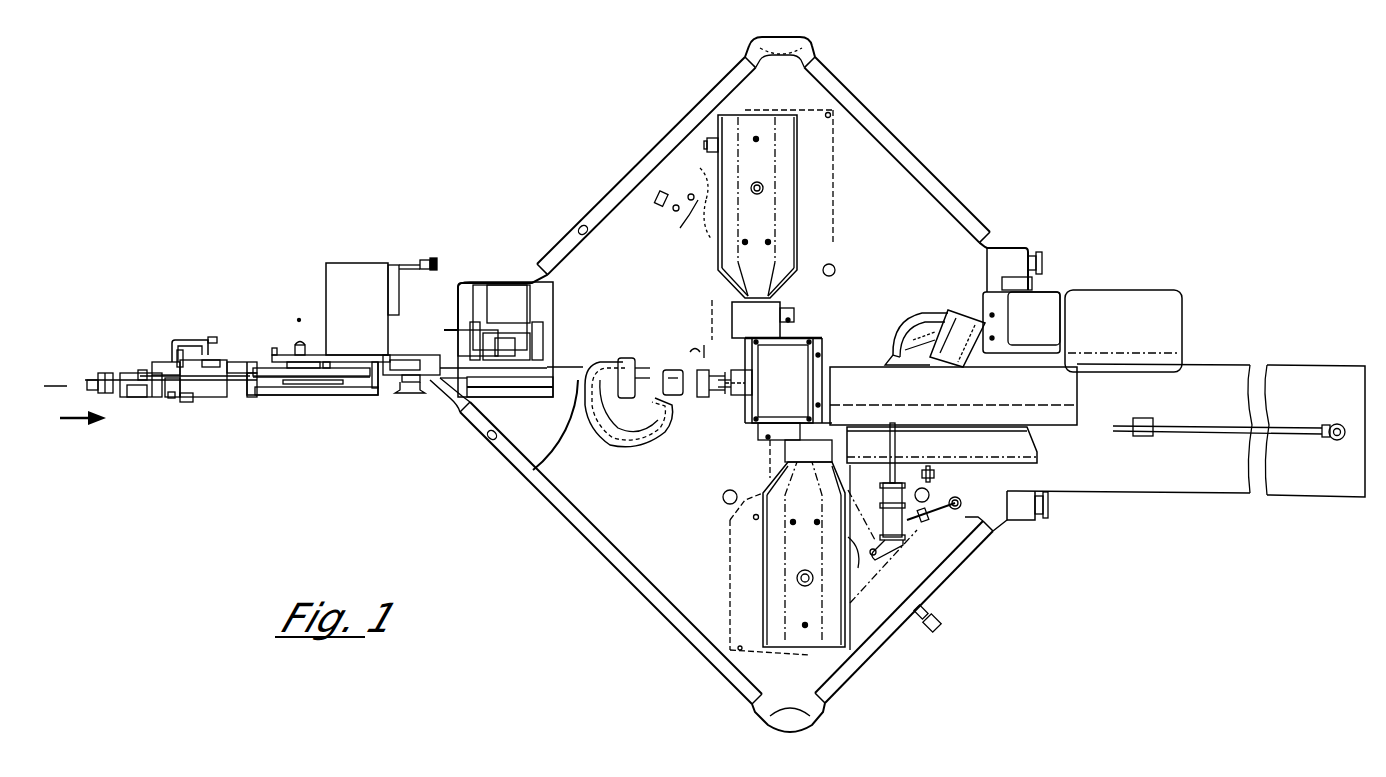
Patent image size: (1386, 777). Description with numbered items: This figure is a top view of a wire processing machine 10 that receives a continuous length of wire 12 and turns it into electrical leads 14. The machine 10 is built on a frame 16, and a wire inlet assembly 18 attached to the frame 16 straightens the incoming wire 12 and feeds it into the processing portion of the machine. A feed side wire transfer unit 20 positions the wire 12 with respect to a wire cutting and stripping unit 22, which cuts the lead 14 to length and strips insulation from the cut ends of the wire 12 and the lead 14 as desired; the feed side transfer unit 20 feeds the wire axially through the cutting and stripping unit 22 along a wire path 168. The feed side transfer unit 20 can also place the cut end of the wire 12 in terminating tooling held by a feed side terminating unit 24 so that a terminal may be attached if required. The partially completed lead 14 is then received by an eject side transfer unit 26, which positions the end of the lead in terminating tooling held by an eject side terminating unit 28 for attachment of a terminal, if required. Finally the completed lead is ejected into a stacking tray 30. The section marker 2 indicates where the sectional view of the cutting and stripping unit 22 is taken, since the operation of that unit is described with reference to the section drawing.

The wire processing machine 10 is at (922, 101).
The wire 12 is at (52, 383).
The electrical lead 14 is at (1216, 426).
The frame 16 is at (917, 217).
The wire inlet assembly 18 is at (356, 240).
The feed side wire transfer unit 20 is at (658, 363).
The wire cutting and stripping unit 22 is at (838, 330).
The feed side terminating unit 24 is at (730, 147).
The eject side transfer unit 26 is at (963, 312).
The eject side terminating unit 28 is at (815, 640).
The stacking tray 30 is at (1210, 497).
The wire path 168 is at (533, 470).
The section line FIG. 2 is at (755, 316).